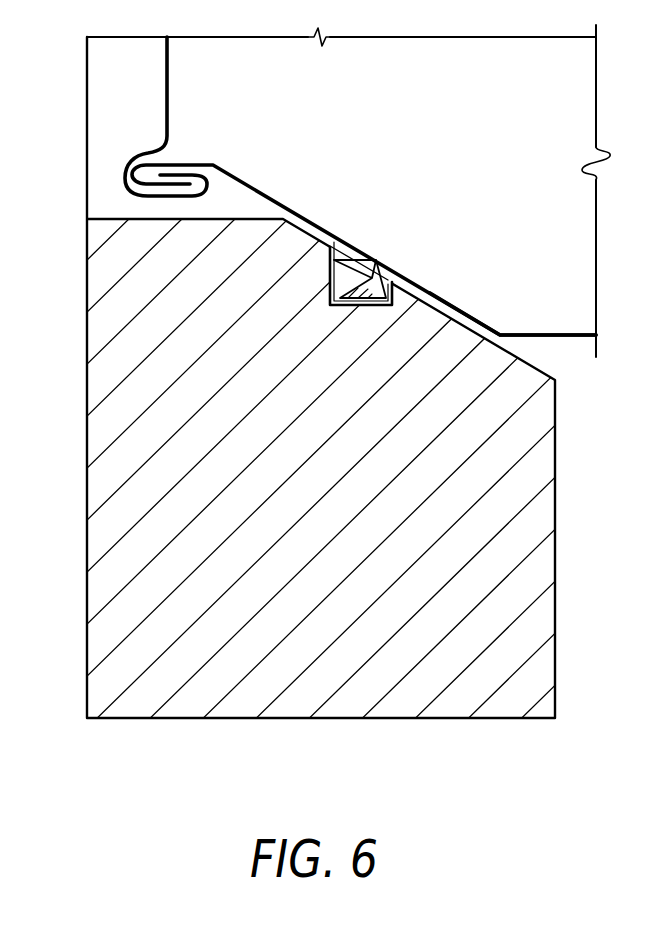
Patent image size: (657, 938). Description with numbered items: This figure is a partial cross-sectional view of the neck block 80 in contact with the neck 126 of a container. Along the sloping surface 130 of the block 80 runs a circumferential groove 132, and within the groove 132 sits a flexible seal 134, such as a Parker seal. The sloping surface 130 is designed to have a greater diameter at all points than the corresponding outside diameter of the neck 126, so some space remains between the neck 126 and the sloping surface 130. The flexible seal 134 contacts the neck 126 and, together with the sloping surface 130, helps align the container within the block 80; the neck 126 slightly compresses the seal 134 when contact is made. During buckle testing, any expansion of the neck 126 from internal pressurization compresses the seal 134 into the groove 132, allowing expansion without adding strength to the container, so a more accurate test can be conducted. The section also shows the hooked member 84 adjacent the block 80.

The block 80 is at (87, 270).
The hooked retaining member 84 is at (100, 217).
The neck 126 is at (247, 184).
The sloping surface 130 is at (451, 308).
The circumferential groove 132 is at (340, 258).
The flexible seal 134 is at (392, 272).